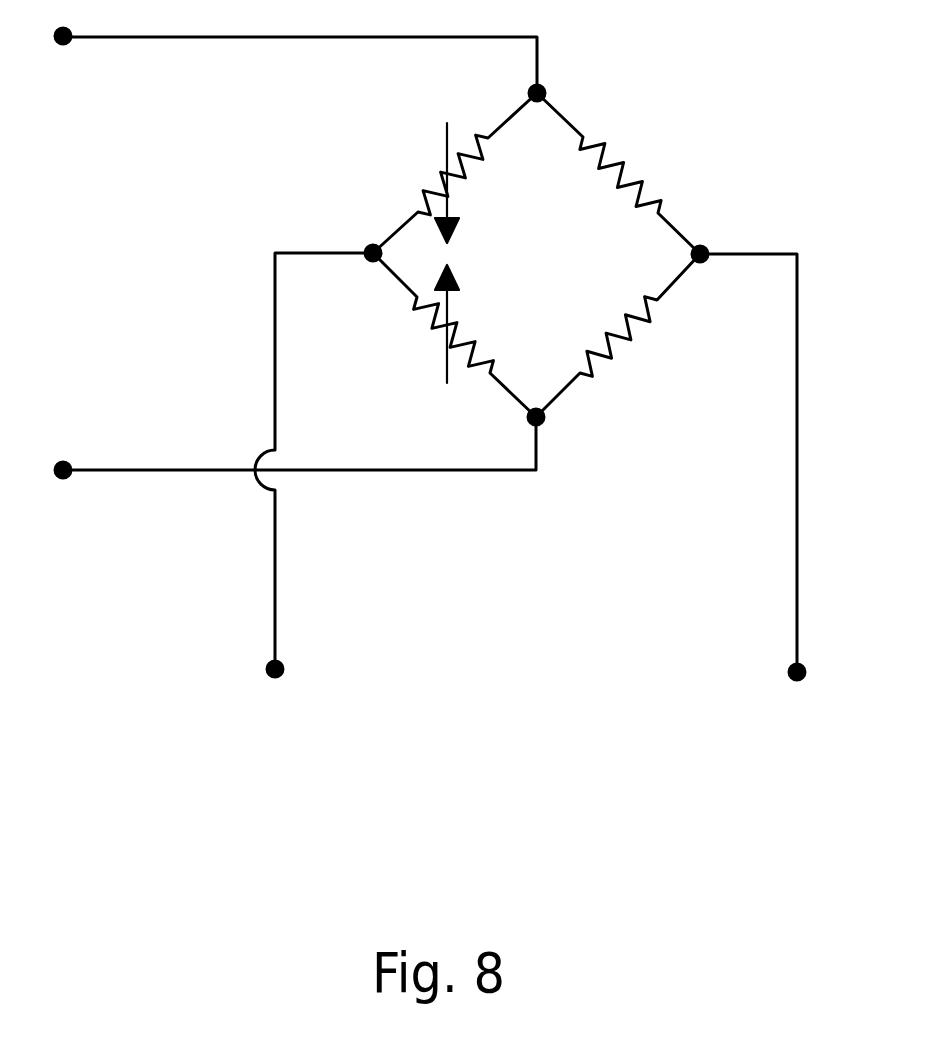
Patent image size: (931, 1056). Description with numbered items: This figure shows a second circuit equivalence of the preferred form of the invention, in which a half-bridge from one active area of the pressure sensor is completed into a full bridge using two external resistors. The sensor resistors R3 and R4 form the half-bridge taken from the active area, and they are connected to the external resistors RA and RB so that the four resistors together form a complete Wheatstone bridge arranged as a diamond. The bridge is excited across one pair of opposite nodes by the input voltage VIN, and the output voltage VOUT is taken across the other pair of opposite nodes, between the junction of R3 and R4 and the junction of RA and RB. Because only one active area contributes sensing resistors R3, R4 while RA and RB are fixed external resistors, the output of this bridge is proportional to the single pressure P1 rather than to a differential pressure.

The resistor R3 is at (455, 173).
The resistor R4 is at (454, 335).
The external resistor RA is at (618, 173).
The external resistor RB is at (618, 335).
The input voltage VIN is at (285, 253).
The output voltage VOUT is at (530, 474).